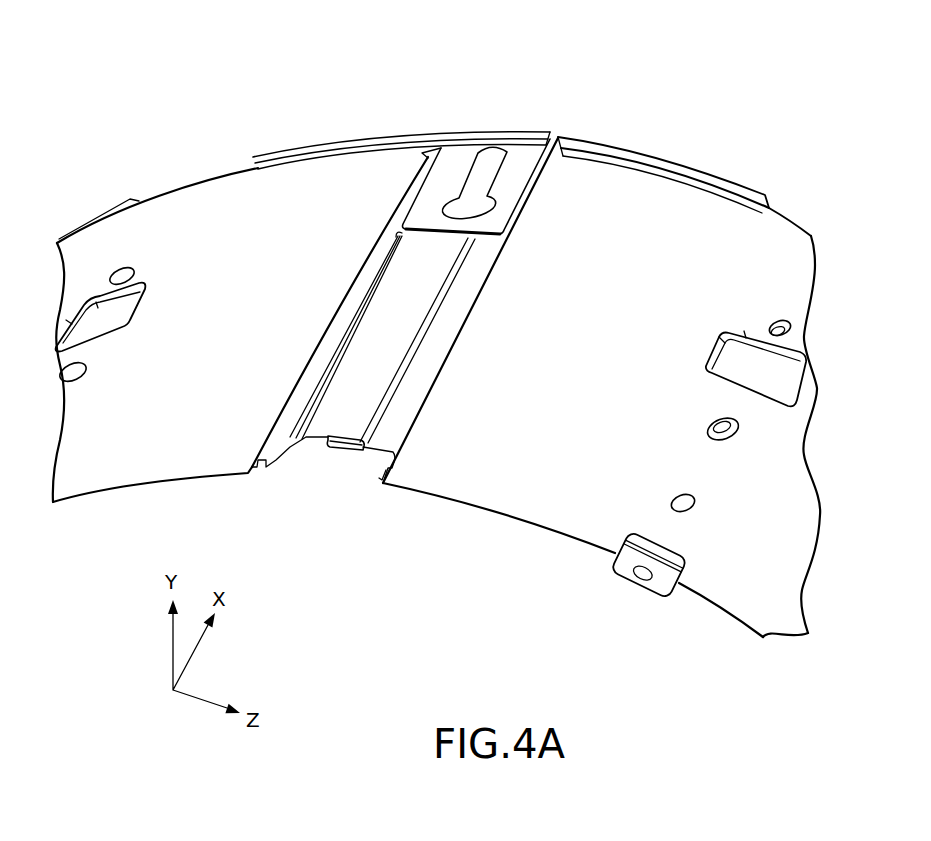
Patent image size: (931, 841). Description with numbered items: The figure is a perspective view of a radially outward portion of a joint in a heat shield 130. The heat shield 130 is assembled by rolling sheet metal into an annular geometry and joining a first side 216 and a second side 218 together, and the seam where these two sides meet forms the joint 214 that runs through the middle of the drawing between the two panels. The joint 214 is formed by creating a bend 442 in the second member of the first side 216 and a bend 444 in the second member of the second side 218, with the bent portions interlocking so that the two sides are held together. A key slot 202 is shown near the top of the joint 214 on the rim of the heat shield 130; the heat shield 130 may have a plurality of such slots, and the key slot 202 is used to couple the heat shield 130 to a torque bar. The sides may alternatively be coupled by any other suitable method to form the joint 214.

The heat shield 130 is at (667, 78).
The key slot 202 is at (489, 165).
The joint 214 is at (400, 302).
The first side 216 is at (317, 283).
The second side 218 is at (497, 333).
The bend 442 is at (388, 440).
The bend 444 is at (309, 456).